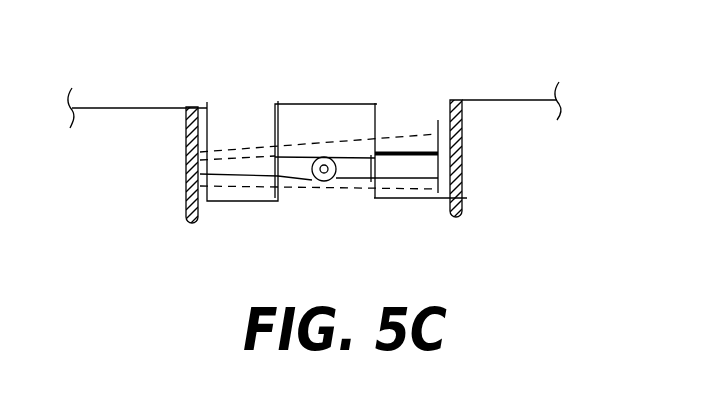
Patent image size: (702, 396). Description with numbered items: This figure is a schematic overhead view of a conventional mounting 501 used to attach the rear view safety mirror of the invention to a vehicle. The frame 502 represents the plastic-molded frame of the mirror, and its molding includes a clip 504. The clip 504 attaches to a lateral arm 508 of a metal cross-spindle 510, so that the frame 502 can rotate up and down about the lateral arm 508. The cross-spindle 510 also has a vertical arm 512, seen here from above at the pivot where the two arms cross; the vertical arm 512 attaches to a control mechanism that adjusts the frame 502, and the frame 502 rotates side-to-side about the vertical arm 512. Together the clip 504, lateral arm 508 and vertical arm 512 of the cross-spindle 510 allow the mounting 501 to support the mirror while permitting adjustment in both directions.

The conventional mounting 501 is at (503, 177).
The frame 502 is at (314, 128).
The clip 504 is at (238, 202).
The lateral arm 508 is at (352, 177).
The cross-spindle 510 is at (350, 137).
The vertical arm 512 is at (312, 180).